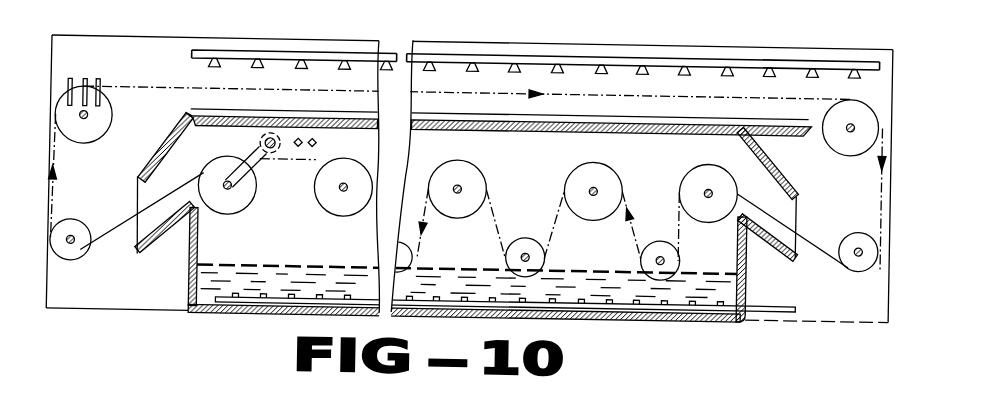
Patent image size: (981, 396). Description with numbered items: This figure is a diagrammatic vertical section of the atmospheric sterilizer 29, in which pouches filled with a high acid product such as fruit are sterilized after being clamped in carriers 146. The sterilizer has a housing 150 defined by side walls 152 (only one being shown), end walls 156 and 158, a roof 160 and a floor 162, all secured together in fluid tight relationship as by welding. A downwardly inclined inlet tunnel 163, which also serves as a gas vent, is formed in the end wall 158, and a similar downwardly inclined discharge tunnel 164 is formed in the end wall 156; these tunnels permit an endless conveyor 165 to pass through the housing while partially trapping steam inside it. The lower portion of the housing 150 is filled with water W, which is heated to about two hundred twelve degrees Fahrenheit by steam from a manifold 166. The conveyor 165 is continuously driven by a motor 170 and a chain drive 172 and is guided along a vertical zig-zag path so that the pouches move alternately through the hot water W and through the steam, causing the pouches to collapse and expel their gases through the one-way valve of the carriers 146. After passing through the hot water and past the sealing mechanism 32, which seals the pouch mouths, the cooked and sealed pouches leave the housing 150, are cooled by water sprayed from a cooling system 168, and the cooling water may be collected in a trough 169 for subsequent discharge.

The atmospheric sterilizer 29 is at (740, 25).
The sealing mechanism 32 is at (322, 138).
The carriers 146 is at (71, 78).
The housing 150 is at (193, 285).
The side walls 152 is at (669, 160).
The end wall 156 is at (193, 266).
The end wall 158 is at (751, 265).
The roof 160 is at (237, 112).
The floor 162 is at (230, 310).
The inlet tunnel 163 is at (791, 185).
The discharge tunnel 164 is at (140, 191).
The endless conveyor 165 is at (633, 86).
The manifold 166 is at (723, 302).
The cooling system 168 is at (428, 48).
The trough 169 is at (476, 110).
The motor 170 is at (260, 140).
The chain drive 172 is at (288, 164).
The water W is at (296, 260).